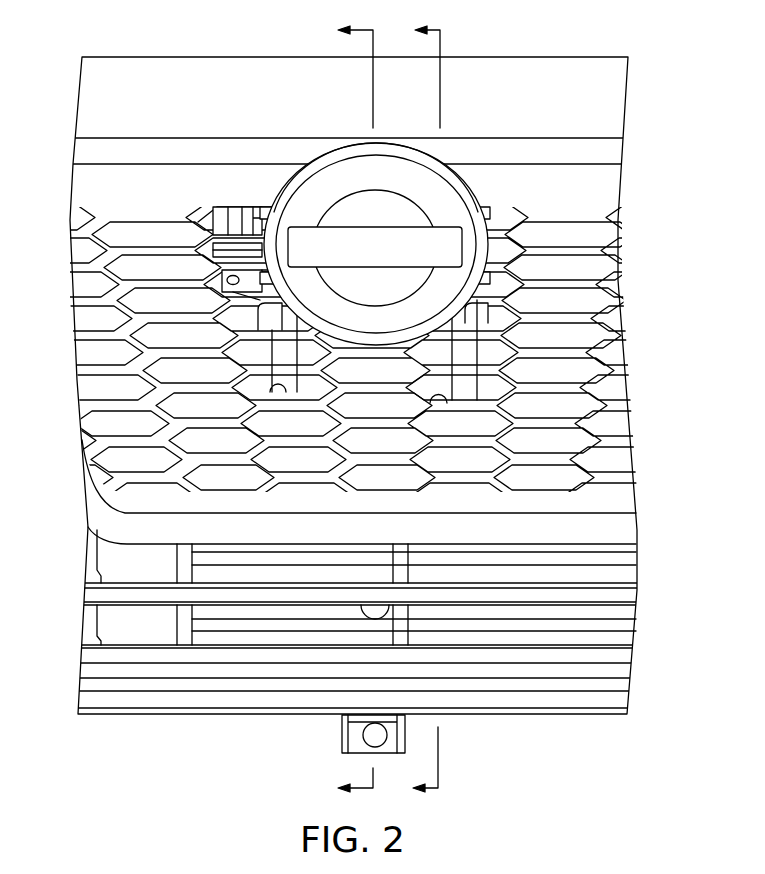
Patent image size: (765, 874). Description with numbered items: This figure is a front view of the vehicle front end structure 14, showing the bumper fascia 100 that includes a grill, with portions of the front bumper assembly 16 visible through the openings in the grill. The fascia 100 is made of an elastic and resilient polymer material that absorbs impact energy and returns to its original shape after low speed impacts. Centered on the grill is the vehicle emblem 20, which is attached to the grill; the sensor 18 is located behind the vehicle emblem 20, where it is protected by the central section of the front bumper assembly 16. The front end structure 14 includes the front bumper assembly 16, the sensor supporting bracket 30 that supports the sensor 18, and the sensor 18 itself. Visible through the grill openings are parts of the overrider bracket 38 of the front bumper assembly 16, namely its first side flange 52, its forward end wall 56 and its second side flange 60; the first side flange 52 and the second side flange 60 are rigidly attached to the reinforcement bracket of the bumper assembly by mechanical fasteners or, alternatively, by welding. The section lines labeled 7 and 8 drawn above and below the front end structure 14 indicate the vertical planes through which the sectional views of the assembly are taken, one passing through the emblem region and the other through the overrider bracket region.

The vehicle front end structure 14 is at (556, 53).
The front bumper assembly 16 is at (613, 458).
The sensor 18 is at (196, 238).
The vehicle emblem 20 is at (432, 201).
The sensor supporting bracket 30 is at (243, 215).
The overrider bracket 38 is at (297, 357).
The first side flange 52 is at (283, 390).
The forward end wall 56 is at (445, 355).
The second side flange 60 is at (467, 390).
The fascia 100 is at (148, 527).
The section line 7 is at (342, 411).
The section line 8 is at (414, 411).